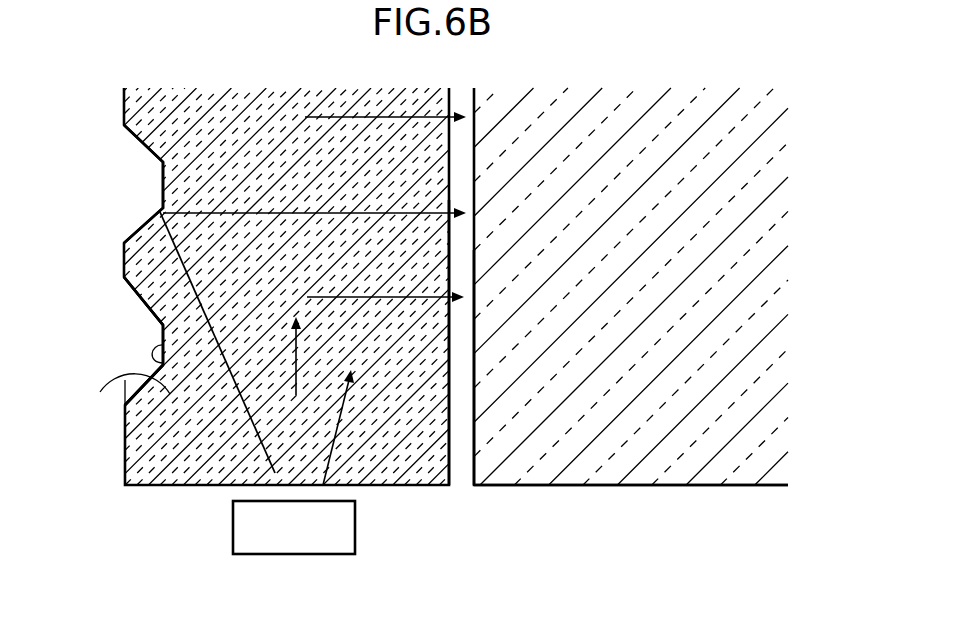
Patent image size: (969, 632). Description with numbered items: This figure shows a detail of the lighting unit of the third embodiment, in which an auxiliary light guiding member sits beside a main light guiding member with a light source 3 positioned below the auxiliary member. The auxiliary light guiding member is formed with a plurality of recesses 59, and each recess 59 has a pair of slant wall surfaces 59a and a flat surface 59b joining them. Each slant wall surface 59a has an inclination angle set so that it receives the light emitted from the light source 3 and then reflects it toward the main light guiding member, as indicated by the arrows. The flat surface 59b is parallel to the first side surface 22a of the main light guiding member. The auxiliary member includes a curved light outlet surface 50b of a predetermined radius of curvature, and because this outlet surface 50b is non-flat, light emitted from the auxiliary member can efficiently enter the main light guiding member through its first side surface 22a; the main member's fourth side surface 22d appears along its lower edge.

The light source 3 is at (313, 554).
The first side surface 22a is at (474, 343).
The fourth side surface 22d is at (673, 487).
The light outlet surface 50b is at (449, 333).
The recess 59 is at (141, 183).
The slant wall surface 59a is at (138, 303).
The flat surface 59b is at (217, 342).